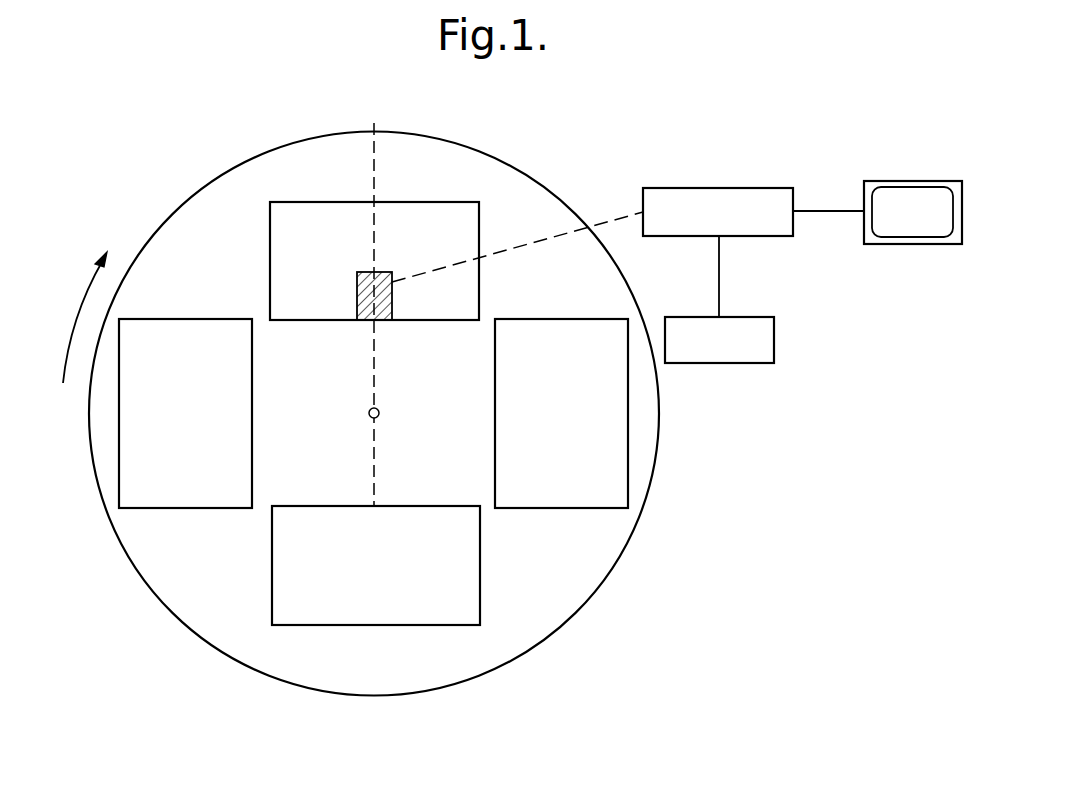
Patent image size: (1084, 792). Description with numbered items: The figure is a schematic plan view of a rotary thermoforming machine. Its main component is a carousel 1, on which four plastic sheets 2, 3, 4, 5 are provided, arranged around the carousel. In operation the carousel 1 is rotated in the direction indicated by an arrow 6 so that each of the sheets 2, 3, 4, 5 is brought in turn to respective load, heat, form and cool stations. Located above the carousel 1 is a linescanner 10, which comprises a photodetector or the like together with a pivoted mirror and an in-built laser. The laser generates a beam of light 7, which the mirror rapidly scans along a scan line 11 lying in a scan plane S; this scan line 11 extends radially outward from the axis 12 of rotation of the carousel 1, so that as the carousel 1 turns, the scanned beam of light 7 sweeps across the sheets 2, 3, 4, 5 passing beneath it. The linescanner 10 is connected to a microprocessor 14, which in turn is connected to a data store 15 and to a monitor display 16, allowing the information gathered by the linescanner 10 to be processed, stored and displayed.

The carousel 1 is at (528, 178).
The plastic sheet 2 is at (560, 319).
The plastic sheet 3 is at (310, 506).
The plastic sheet 4 is at (182, 319).
The plastic sheet 5 is at (301, 202).
The arrow 6 is at (78, 310).
The beam of light 7 is at (392, 300).
The linescanner 10 is at (370, 285).
The scan line 11 is at (375, 152).
The axis of rotation 12 is at (380, 413).
The microprocessor 14 is at (684, 188).
The data store 15 is at (745, 363).
The monitor display 16 is at (900, 181).
The scan plane S is at (377, 131).